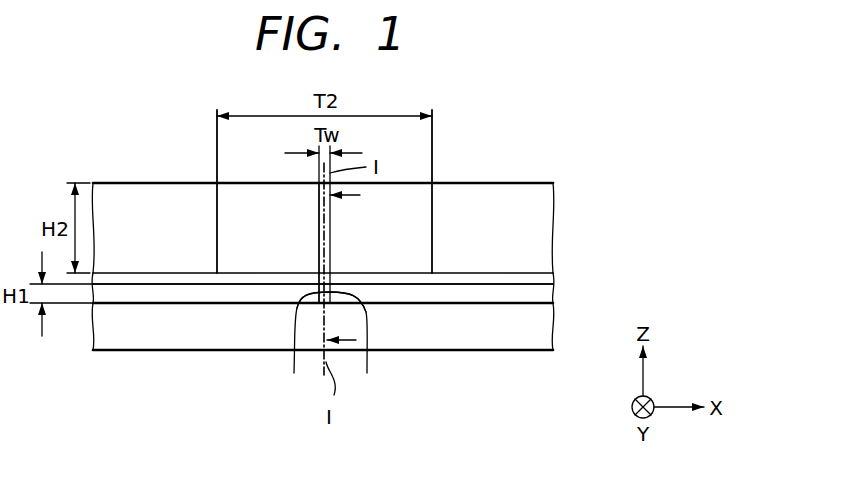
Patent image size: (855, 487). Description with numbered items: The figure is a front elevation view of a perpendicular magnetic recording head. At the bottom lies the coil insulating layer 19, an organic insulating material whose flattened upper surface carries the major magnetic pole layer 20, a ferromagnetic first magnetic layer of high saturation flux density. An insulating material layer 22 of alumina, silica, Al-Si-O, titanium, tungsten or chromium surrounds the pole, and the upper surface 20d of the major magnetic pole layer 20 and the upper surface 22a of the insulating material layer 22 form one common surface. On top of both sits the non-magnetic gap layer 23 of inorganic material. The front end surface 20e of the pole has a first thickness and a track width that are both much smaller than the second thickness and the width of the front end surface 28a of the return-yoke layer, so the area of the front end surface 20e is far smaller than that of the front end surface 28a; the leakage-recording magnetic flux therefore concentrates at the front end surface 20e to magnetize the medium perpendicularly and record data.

The coil insulating layer 19 is at (418, 338).
The major magnetic pole layer 20 is at (341, 280).
The upper surface of major magnetic pole layer 20d is at (319, 272).
The front end surface of major magnetic pole layer 20e is at (319, 347).
The insulating material layer 22 is at (143, 292).
The upper surface of insulating material layer 22a is at (468, 283).
The gap layer 23 is at (165, 276).
The front end surface of return-yoke layer 28a is at (427, 234).